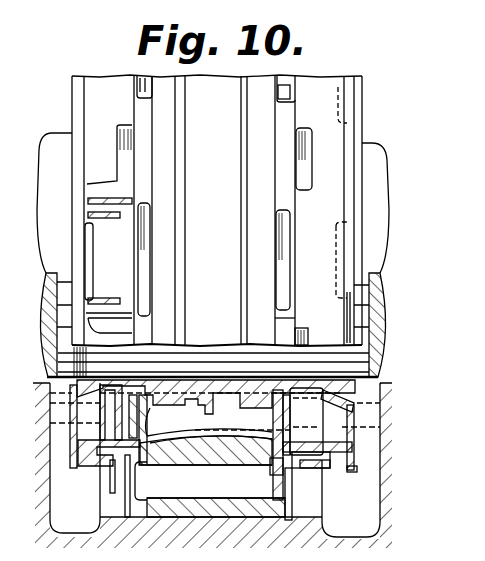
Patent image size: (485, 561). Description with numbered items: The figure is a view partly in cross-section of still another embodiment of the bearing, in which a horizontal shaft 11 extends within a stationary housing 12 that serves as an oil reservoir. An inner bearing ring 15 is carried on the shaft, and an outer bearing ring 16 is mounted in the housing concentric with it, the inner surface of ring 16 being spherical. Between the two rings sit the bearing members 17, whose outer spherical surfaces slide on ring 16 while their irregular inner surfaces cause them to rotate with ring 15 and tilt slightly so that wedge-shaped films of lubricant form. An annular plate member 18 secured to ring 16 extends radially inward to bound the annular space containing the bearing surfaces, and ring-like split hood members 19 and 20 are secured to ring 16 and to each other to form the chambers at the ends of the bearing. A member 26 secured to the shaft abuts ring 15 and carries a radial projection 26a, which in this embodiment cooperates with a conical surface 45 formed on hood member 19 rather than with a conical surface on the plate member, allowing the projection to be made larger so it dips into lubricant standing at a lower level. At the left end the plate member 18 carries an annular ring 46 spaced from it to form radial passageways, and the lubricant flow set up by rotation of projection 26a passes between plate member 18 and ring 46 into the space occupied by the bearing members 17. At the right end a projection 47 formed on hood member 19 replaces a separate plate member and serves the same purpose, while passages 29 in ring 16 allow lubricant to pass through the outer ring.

The horizontal shaft 11 is at (378, 168).
The housing 12 is at (380, 490).
The inner bearing ring 15 is at (228, 392).
The outer bearing ring 16 is at (204, 498).
The bearing members 17 is at (197, 437).
The annular plate member 18 is at (150, 435).
The hood member 19 is at (140, 110).
The hood member 20 is at (103, 84).
The member 26 is at (98, 376).
The projection 26a is at (134, 375).
The passages 29 is at (216, 495).
The conical surface 45 is at (100, 458).
The annular ring 46 is at (127, 395).
The projection 47 is at (283, 430).